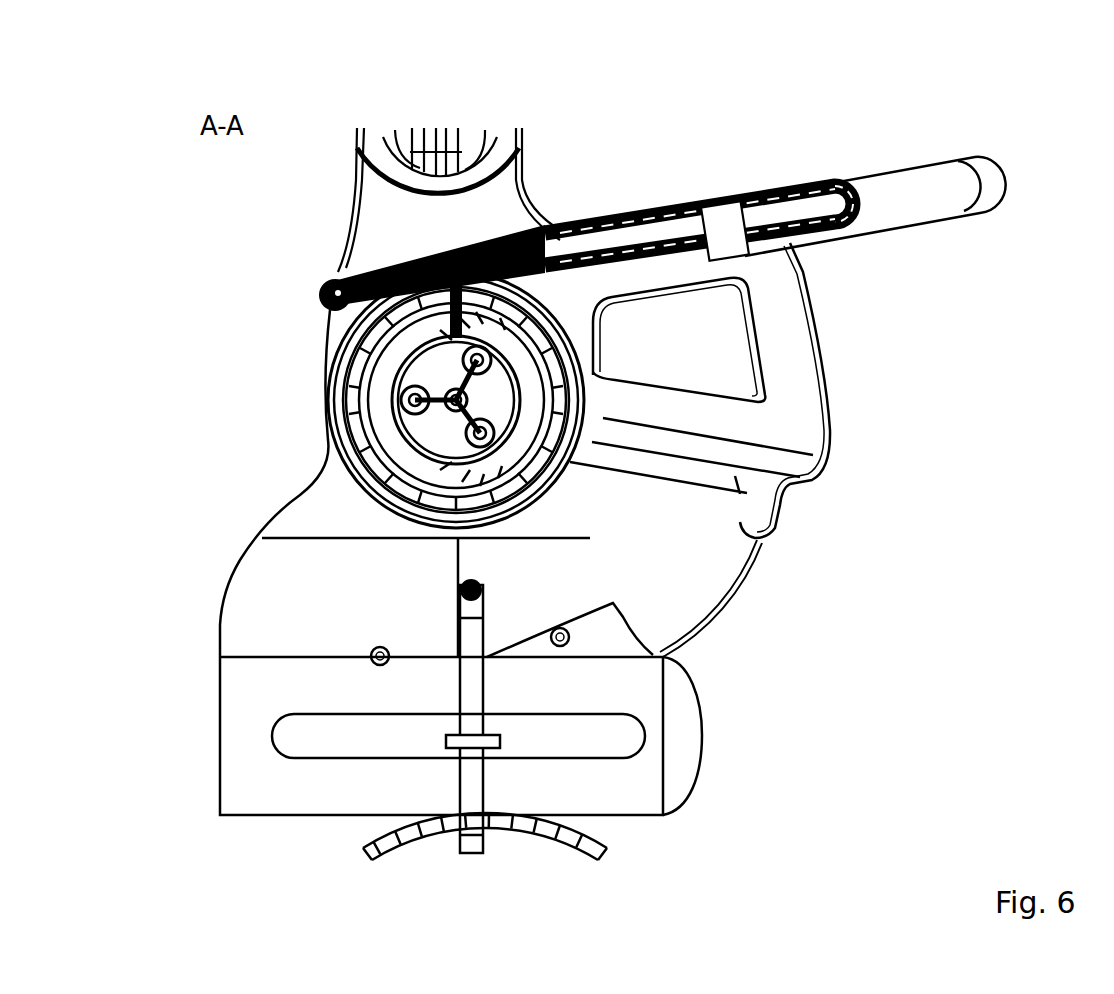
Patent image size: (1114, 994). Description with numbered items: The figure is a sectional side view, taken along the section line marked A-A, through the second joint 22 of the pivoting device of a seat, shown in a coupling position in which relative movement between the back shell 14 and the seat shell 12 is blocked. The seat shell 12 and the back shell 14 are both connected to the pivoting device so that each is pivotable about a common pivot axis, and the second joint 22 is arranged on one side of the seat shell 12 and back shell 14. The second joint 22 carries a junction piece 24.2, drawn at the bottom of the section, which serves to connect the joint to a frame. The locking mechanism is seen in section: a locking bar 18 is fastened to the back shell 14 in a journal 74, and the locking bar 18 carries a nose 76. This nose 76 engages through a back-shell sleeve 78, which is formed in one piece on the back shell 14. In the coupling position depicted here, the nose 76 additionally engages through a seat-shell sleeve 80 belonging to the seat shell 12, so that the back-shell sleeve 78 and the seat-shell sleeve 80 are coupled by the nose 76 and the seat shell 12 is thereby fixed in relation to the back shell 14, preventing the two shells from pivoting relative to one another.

The second joint 22 is at (728, 146).
The nose 76 is at (548, 222).
The journal 74 is at (318, 297).
The locking bar 18 is at (962, 183).
The seat-shell sleeve 80 is at (335, 356).
The back-shell sleeve 78 is at (330, 458).
The back shell 14 is at (805, 360).
The seat shell 12 is at (700, 555).
The junction piece 24.2 is at (588, 842).